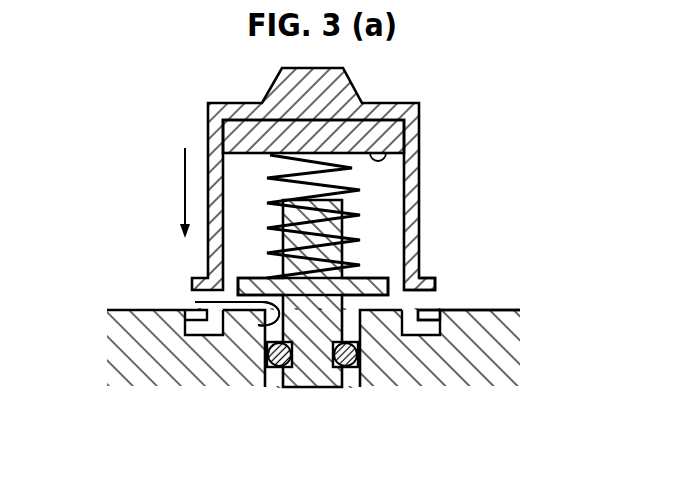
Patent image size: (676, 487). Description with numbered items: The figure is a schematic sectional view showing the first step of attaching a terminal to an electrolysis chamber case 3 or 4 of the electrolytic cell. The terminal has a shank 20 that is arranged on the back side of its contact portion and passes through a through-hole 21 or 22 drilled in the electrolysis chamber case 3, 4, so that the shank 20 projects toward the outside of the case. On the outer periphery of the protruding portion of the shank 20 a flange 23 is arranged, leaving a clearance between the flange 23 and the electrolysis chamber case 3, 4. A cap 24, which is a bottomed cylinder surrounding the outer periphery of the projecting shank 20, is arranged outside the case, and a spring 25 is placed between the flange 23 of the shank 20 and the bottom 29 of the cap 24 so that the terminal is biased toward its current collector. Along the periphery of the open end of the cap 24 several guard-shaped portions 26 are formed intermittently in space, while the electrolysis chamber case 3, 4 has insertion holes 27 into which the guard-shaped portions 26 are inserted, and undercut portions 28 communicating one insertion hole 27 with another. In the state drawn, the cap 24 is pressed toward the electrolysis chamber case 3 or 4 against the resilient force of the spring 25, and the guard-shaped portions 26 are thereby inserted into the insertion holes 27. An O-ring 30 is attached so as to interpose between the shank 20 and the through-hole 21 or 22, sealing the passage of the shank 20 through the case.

The electrolysis chamber case 3 is at (133, 310).
The electrolysis chamber case 4 is at (312, 322).
The shank 20 is at (343, 228).
The through-hole 21 is at (195, 302).
The through-hole 22 is at (268, 314).
The flange 23 is at (257, 277).
The cap 24 is at (419, 167).
The spring 25 is at (353, 193).
The guard-shaped portion 26 is at (433, 283).
The insertion hole 27 is at (431, 305).
The undercut portion 28 is at (440, 325).
The bottom 29 is at (394, 150).
The O-ring 30 is at (358, 354).